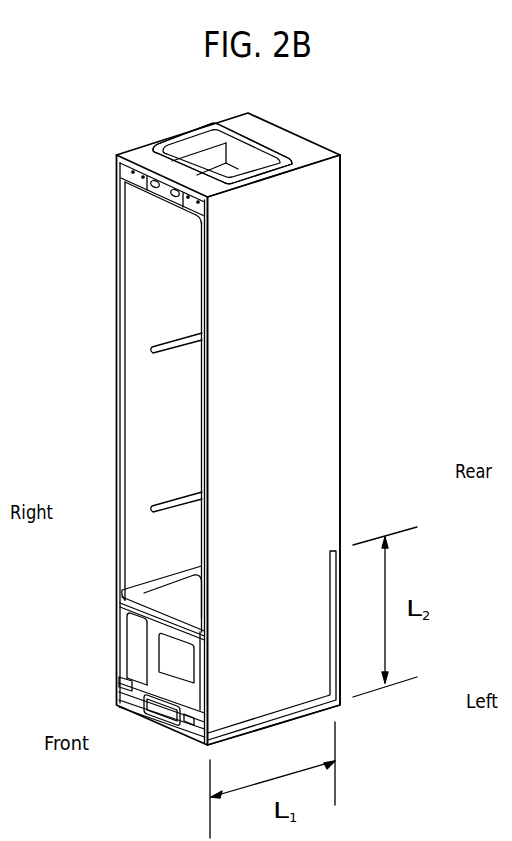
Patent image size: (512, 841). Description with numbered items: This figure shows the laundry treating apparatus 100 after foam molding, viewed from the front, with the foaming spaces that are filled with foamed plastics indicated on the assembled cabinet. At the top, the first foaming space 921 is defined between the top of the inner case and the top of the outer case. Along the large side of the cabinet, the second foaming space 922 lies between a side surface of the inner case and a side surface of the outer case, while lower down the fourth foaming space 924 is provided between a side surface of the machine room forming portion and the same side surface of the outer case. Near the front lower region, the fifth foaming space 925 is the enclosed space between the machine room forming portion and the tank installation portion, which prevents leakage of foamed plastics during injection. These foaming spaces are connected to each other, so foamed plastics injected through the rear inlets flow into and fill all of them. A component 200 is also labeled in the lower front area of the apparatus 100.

The laundry treating apparatus 100 is at (85, 94).
The first foaming space 921 is at (295, 141).
The second foaming space 922 is at (273, 354).
The fourth foaming space 924 is at (272, 647).
The fifth foaming space 925 is at (126, 634).
The machine room cover 200 is at (181, 647).